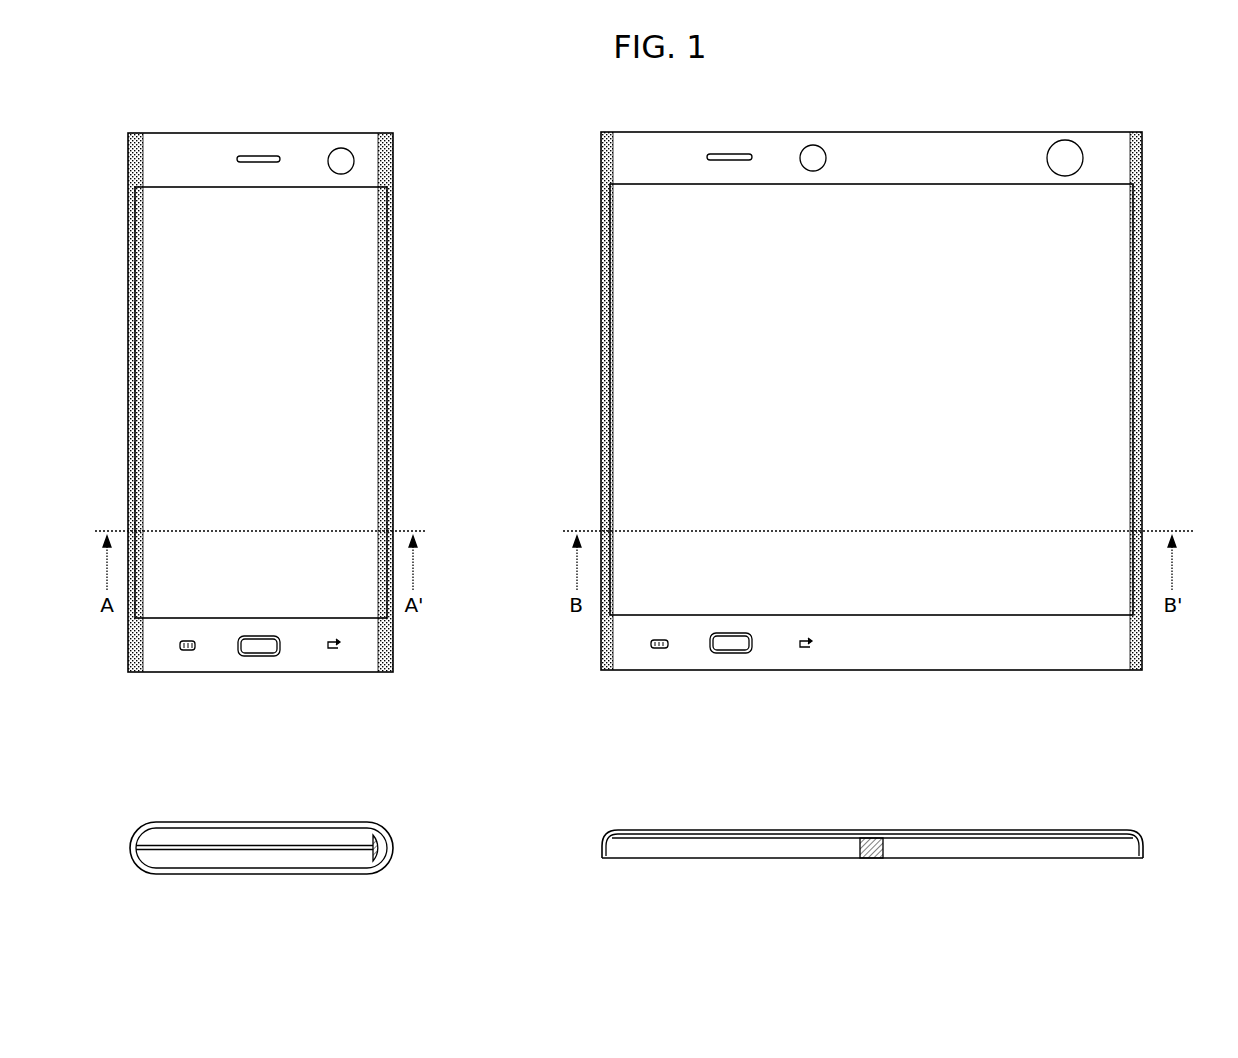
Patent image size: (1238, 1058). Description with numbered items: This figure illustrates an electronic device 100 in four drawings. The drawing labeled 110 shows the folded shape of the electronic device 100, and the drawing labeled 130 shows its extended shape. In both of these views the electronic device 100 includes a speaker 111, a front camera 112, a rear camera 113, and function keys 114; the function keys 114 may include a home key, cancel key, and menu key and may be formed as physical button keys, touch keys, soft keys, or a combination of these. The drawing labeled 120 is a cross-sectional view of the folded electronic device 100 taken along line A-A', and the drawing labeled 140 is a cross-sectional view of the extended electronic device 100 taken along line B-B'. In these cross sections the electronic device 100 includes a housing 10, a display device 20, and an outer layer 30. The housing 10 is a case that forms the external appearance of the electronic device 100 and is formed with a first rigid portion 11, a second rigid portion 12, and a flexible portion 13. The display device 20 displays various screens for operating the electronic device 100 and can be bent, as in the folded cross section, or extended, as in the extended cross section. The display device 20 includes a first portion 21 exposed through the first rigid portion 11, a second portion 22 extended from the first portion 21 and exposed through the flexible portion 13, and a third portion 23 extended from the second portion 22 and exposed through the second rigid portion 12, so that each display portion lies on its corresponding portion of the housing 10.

The electronic device 100 is at (537, 106).
The drawing of folded shape 110 is at (400, 131).
The speaker 111 is at (257, 155).
The front camera 112 is at (339, 155).
The rear camera 113 is at (1066, 153).
The function keys 114 is at (188, 651).
The drawing of cross-sectional view along line A-A' 120 is at (298, 812).
The drawing of extended shape 130 is at (1150, 133).
The drawing of cross-sectional view along line B-B' 140 is at (1097, 799).
The housing 10 is at (427, 808).
The first rigid portion 11 is at (386, 829).
The second rigid portion 12 is at (386, 867).
The flexible portion 13 is at (387, 848).
The display device 20 is at (320, 869).
The first portion 21 is at (808, 834).
The second portion 22 is at (872, 837).
The third portion 23 is at (1029, 834).
The outer layer 30 is at (252, 876).